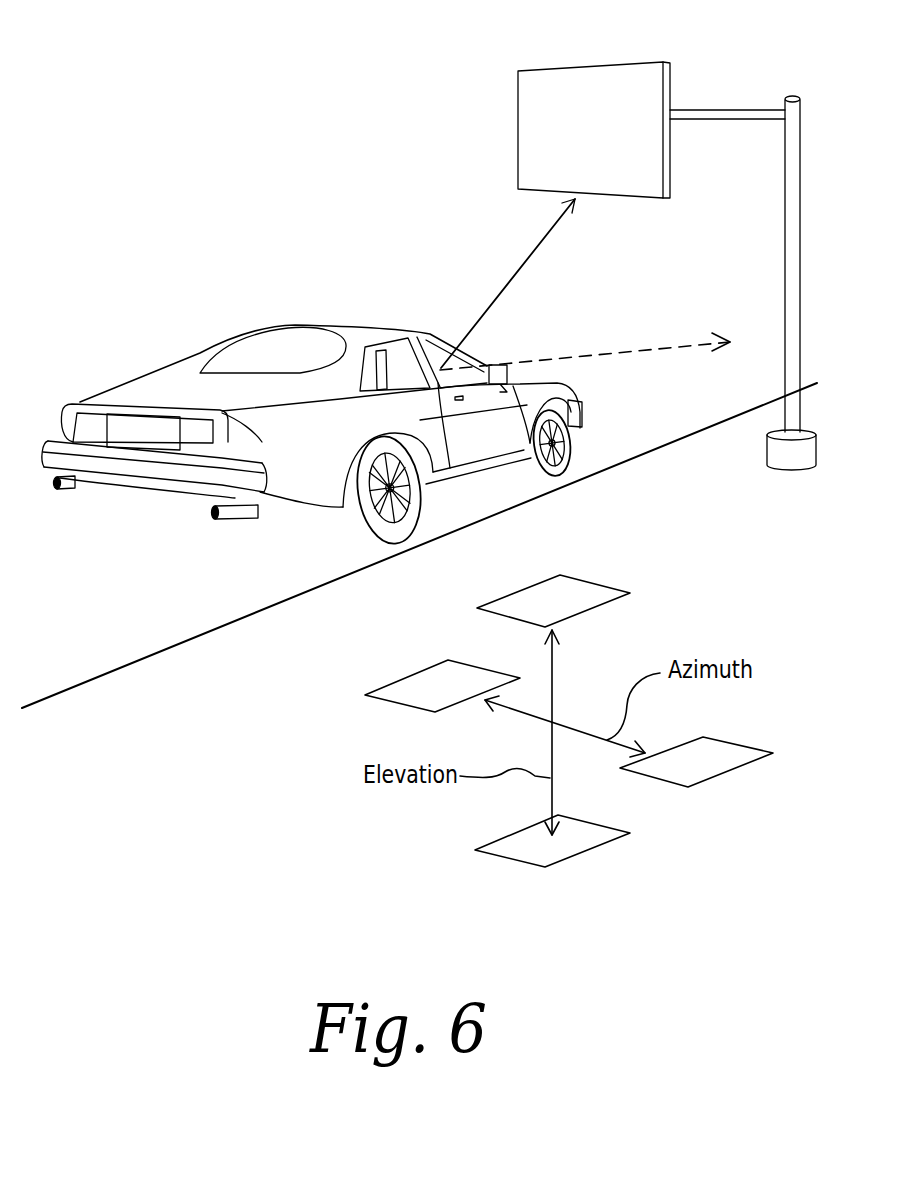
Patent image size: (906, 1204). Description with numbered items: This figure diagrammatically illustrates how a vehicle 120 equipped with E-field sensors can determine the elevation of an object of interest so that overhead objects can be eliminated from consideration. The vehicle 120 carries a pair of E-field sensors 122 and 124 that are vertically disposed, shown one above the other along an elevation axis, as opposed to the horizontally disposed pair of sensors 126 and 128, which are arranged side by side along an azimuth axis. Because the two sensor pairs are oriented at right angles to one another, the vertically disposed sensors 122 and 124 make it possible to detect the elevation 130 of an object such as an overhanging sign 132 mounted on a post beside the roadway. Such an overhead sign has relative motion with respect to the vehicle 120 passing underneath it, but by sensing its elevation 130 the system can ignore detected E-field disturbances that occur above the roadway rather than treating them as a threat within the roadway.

The vehicle 120 is at (326, 317).
The E-field sensor 122 is at (569, 602).
The E-field sensor 124 is at (510, 844).
The sensor 126 is at (445, 682).
The sensor 128 is at (723, 752).
The elevation 130 is at (557, 227).
The overhanging sign 132 is at (577, 137).